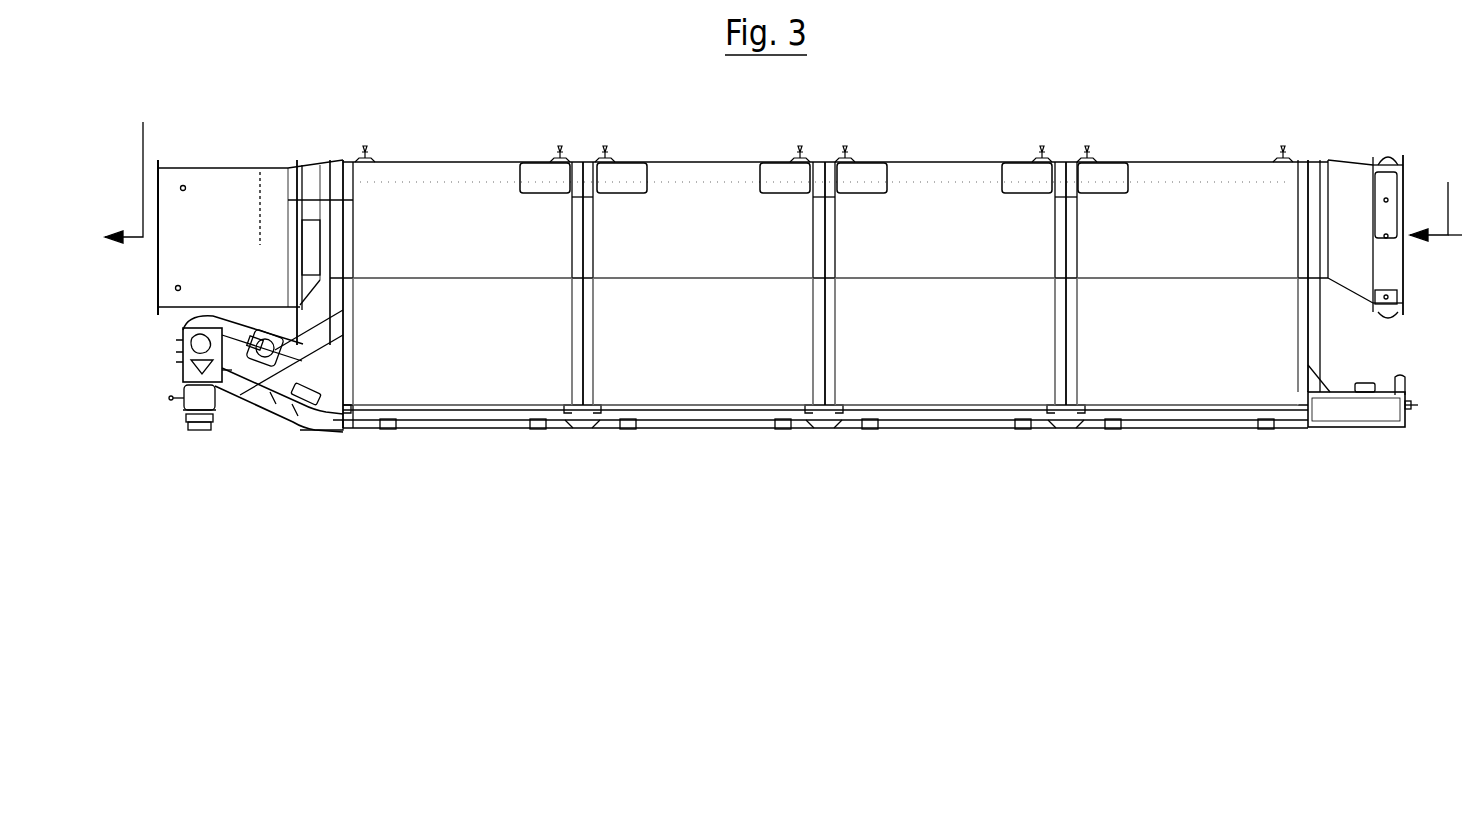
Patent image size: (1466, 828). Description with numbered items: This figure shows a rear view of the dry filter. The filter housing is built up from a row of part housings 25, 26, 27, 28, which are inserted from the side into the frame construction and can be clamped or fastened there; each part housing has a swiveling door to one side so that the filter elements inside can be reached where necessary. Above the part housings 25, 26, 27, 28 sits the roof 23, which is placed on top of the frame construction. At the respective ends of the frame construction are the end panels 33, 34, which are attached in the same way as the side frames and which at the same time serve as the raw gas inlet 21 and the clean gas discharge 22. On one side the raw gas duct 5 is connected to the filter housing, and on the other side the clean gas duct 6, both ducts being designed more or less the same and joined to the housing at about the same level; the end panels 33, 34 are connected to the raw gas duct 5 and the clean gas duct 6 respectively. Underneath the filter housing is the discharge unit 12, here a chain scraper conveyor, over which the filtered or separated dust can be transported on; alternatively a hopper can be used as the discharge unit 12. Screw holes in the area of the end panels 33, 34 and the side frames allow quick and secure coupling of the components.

The raw gas duct 5 is at (1353, 168).
The clean gas duct 6 is at (223, 188).
The discharge unit 12 is at (297, 405).
The raw gas inlet 21 is at (1463, 182).
The clean gas discharge 22 is at (143, 122).
The roof 23 is at (465, 182).
The part housing 25 is at (475, 385).
The part housing 26 is at (713, 382).
The part housing 27 is at (945, 382).
The part housing 28 is at (1207, 382).
The end panel 33 is at (1308, 343).
The end panel 34 is at (338, 387).